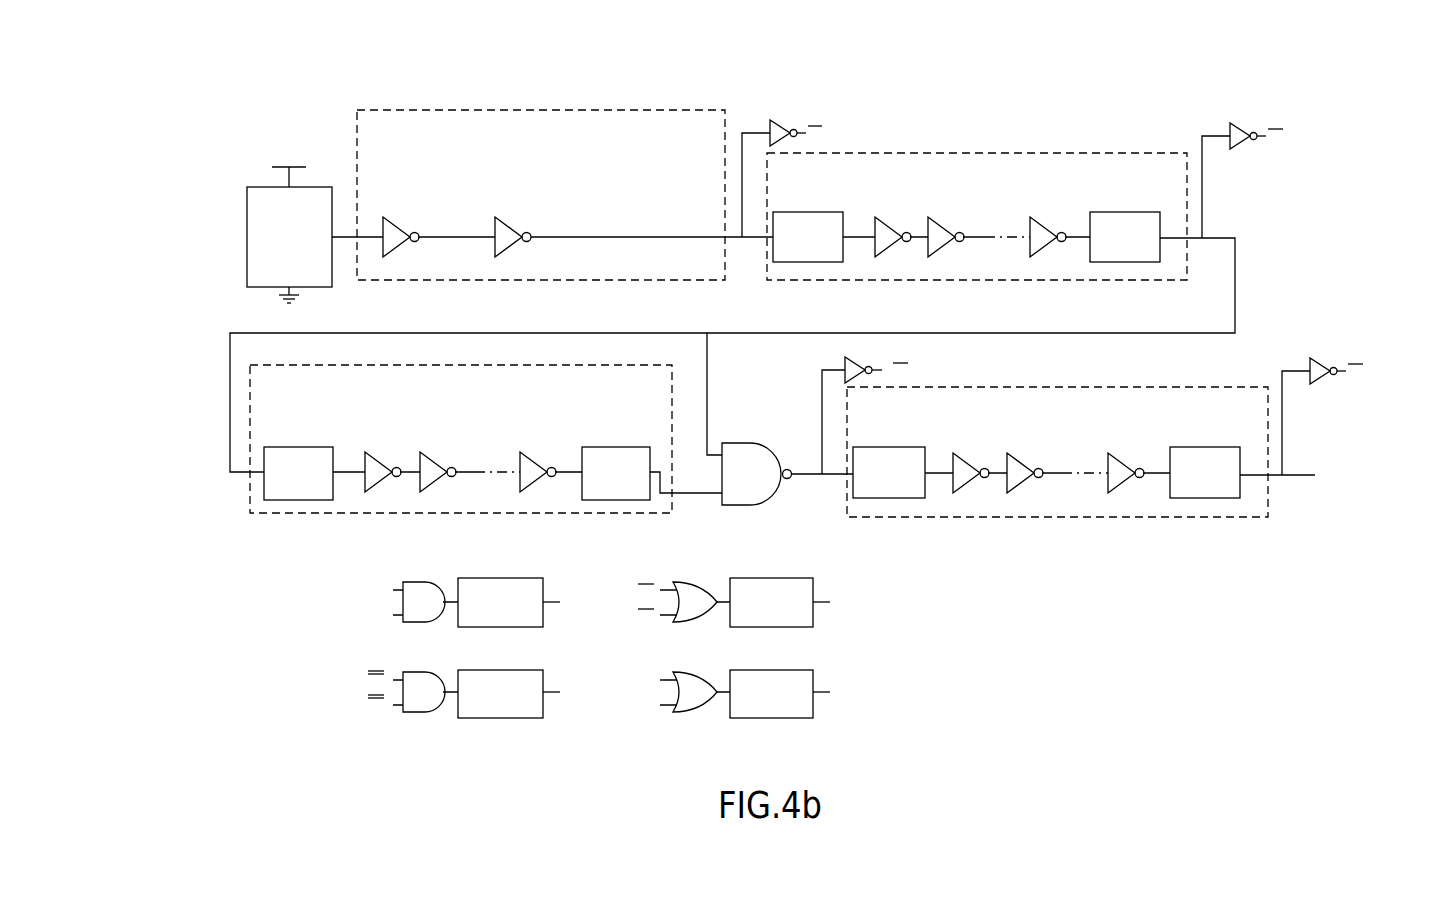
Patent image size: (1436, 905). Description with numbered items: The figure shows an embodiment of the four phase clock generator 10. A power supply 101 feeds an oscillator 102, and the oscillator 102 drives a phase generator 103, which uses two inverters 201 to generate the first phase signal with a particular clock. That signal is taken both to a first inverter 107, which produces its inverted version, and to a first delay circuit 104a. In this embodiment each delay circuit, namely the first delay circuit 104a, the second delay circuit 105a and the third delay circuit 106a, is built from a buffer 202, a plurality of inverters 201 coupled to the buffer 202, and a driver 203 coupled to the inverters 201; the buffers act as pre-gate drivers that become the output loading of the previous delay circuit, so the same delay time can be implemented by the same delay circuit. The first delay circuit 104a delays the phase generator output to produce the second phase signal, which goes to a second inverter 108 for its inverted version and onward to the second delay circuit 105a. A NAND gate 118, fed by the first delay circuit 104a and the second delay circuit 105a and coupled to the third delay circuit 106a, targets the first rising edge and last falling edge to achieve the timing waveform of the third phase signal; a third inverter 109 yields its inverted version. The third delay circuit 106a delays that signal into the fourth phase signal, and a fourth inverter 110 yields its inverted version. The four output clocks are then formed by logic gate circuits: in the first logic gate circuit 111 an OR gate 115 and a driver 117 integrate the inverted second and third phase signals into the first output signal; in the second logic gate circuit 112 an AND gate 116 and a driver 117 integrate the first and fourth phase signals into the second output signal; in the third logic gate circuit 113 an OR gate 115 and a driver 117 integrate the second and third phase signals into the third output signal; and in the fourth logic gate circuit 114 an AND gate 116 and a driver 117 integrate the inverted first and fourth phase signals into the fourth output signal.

The four phase clock generator 10 is at (298, 58).
The power supply 101 is at (272, 146).
The oscillator 102 is at (247, 236).
The phase generator 103 is at (445, 110).
The first delay circuit 104a is at (920, 153).
The second delay circuit 105a is at (320, 365).
The third delay circuit 106a is at (980, 386).
The first inverter 107 is at (794, 128).
The second inverter 108 is at (1250, 130).
The third inverter 109 is at (848, 362).
The fourth inverter 110 is at (1333, 366).
The first logic gate circuit 111 is at (880, 592).
The second logic gate circuit 112 is at (358, 580).
The third logic gate circuit 113 is at (880, 690).
The fourth logic gate circuit 114 is at (355, 675).
The OR gate 115 is at (680, 670).
The AND gate 116 is at (418, 642).
The driver 117 is at (755, 718).
The NAND gate 118 is at (742, 505).
The inverters 201 is at (505, 218).
The buffer 202 is at (787, 212).
The driver 203 is at (1115, 212).